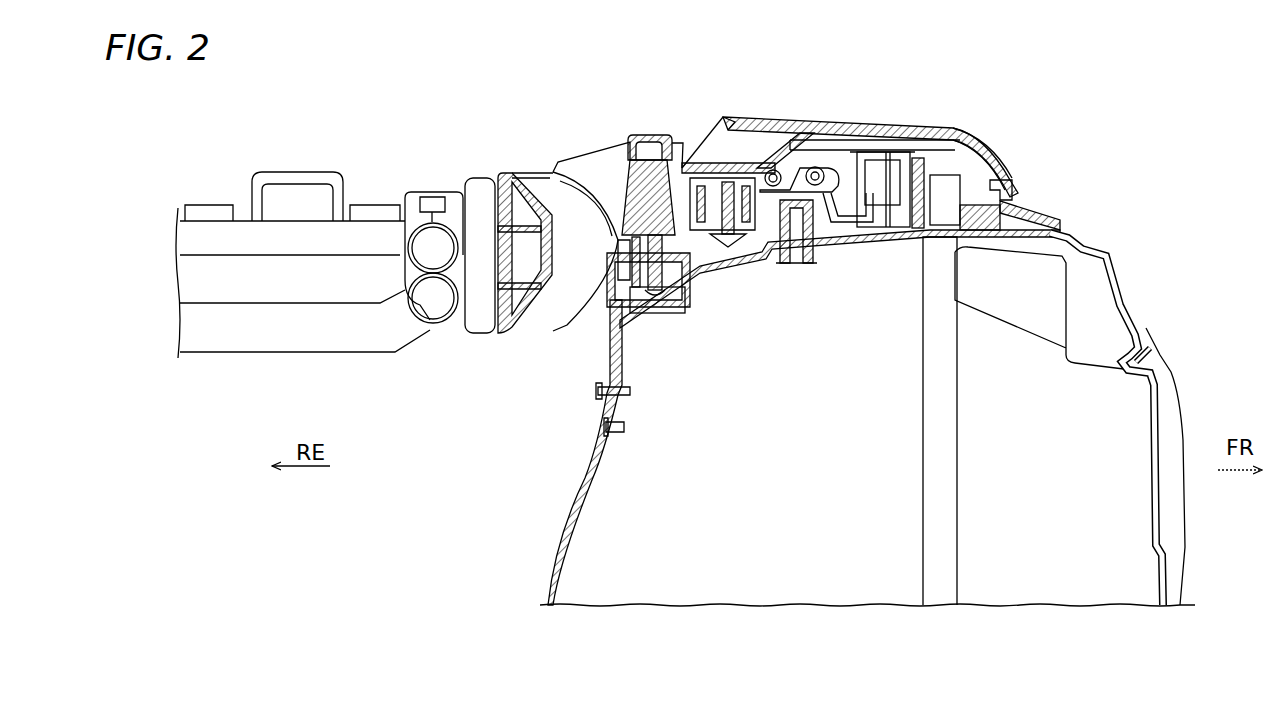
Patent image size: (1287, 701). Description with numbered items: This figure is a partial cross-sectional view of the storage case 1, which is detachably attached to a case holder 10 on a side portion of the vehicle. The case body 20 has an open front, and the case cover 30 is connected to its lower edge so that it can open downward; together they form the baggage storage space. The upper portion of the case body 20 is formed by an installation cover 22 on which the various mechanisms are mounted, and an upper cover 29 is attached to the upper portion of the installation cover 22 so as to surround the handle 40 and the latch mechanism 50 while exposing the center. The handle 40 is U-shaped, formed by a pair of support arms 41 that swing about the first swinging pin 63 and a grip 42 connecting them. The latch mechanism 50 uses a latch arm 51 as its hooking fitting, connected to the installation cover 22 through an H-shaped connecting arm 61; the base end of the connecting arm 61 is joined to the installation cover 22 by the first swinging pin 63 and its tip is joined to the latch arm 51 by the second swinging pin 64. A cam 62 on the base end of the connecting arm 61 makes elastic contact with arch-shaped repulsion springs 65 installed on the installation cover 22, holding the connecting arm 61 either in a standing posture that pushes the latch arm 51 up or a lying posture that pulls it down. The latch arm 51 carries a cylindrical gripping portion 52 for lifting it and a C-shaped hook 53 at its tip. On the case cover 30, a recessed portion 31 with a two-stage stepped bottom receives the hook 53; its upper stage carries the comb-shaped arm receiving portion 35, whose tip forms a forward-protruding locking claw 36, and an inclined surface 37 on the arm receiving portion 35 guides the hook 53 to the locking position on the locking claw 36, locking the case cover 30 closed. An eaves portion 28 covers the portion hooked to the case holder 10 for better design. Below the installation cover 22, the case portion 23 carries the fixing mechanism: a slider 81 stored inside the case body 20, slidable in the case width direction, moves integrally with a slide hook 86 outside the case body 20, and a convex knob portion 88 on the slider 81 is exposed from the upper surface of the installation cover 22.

The storage case 1 is at (1115, 219).
The case holder 10 is at (525, 172).
The case body 20 is at (600, 350).
The installation cover 22 is at (885, 178).
The case portion 23 is at (738, 282).
The eaves portion 28 is at (585, 162).
The upper cover 29 is at (880, 150).
The case cover 30 is at (1183, 312).
The recessed portion 31 is at (1040, 235).
The arm receiving portion 35 is at (962, 140).
The locking claw 36 is at (1005, 190).
The inclined surface 37 is at (985, 156).
The handle 40 is at (672, 130).
The support arms 41 is at (700, 137).
The grip 42 is at (636, 138).
The latch mechanism 50 is at (795, 118).
The latch arm 51 is at (835, 130).
The gripping portion 52 is at (733, 118).
The hook 53 is at (1000, 215).
The connecting arm 61 is at (800, 170).
The cam 62 is at (858, 208).
The first swinging pin 63 is at (830, 170).
The second swinging pin 64 is at (780, 160).
The repulsion springs 65 is at (780, 226).
The slider 81 is at (672, 312).
The slide hook 86 is at (595, 320).
The knob portion 88 is at (622, 188).